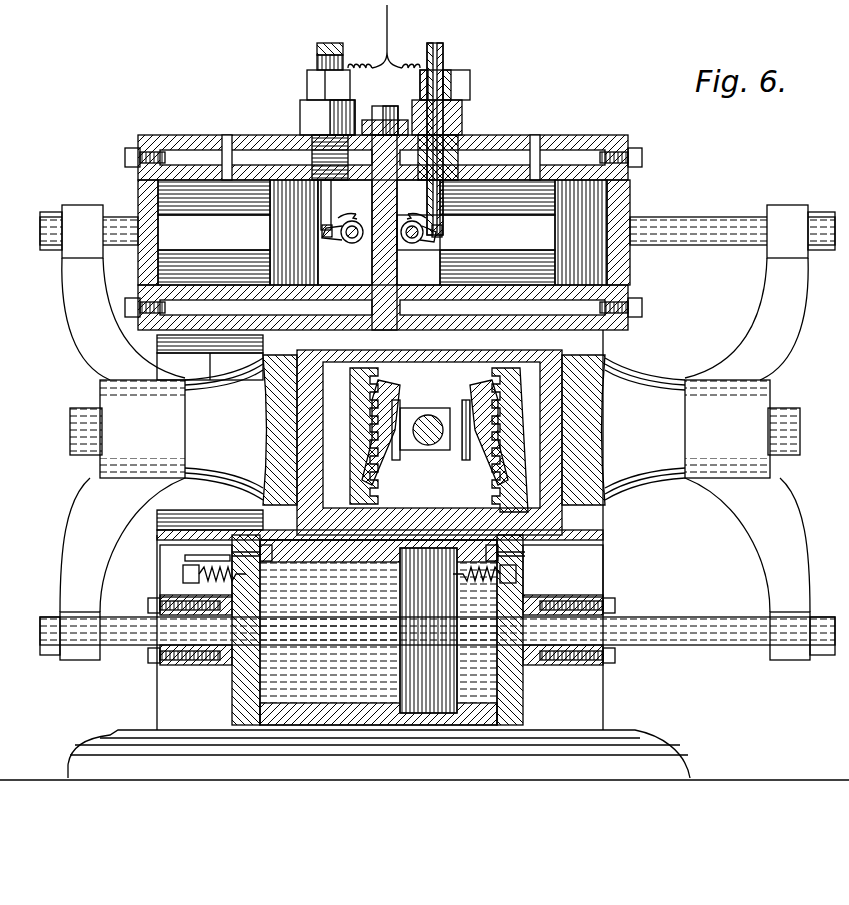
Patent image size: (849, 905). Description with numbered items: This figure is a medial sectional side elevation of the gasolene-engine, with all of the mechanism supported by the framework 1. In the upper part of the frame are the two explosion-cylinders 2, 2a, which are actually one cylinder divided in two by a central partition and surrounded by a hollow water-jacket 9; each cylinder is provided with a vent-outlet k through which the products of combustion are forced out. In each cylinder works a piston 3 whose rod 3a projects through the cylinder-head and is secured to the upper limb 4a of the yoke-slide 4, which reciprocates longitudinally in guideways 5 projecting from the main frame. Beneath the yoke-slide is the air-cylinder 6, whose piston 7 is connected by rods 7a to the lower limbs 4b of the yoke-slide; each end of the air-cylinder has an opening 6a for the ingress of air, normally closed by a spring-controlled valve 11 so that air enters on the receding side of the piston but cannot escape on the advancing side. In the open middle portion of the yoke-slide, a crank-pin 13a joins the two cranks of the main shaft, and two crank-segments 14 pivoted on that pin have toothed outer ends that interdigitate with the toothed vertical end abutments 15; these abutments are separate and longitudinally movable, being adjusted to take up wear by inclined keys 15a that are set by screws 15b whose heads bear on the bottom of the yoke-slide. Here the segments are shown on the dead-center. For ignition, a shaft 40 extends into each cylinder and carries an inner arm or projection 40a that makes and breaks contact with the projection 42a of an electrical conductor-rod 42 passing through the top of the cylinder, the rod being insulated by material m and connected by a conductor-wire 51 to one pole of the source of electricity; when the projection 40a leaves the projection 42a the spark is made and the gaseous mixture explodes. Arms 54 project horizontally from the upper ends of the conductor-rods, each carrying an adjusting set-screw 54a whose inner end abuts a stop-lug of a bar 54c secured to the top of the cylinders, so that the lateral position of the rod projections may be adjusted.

The framework 1 is at (157, 570).
The explosion-cylinder 2 is at (214, 232).
The explosion-cylinder 2a is at (476, 232).
The piston 3 is at (270, 260).
The piston-rod 3a is at (722, 217).
The yoke-slide 4 is at (262, 420).
The upper limb of yoke-slide 4a is at (437, 292).
The lower limb of yoke-slide 4b is at (437, 569).
The guideways 5 is at (228, 353).
The air-cylinder 6 is at (377, 630).
The opening 6a is at (262, 598).
The piston 7 is at (428, 630).
The rod 7a is at (316, 655).
The hollow casing or jacket 9 is at (185, 135).
The spring-controlled valve 11 is at (262, 572).
The crank-pin 13a is at (432, 415).
The crank-segment 14 is at (428, 408).
The end abutment 15 is at (360, 366).
The inclined key 15a is at (618, 380).
The screw 15b is at (360, 502).
The shaft 40 is at (352, 243).
The arm or projection 40a is at (448, 258).
The electrical conductor-rod 42 is at (443, 200).
The arm or projection 42a is at (462, 240).
The conductor-wire 51 is at (388, 32).
The arm 54 is at (317, 48).
The adjusting set-screw 54a is at (55, 422).
The bar 54c is at (392, 115).
The vent-outlet k is at (227, 135).
The insulating material m is at (302, 105).